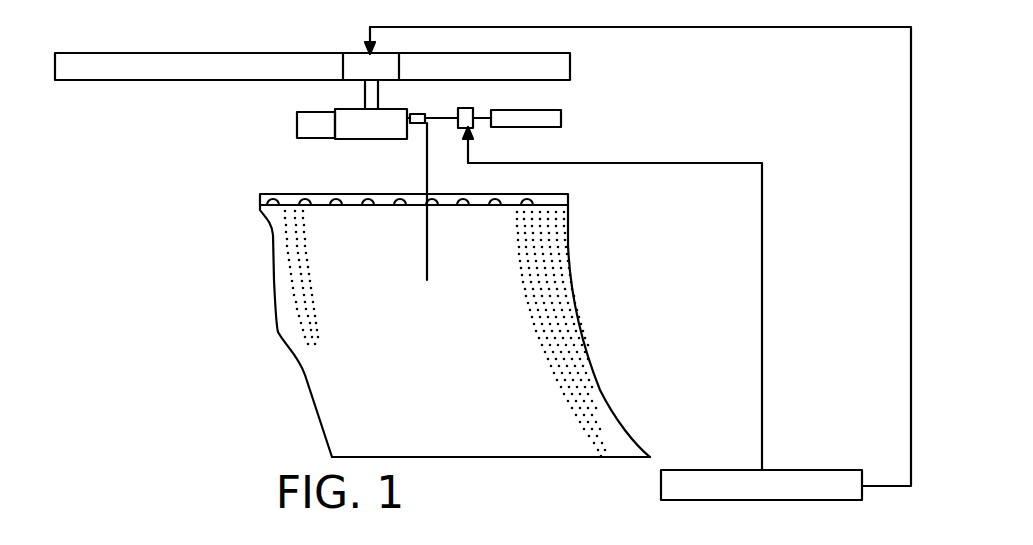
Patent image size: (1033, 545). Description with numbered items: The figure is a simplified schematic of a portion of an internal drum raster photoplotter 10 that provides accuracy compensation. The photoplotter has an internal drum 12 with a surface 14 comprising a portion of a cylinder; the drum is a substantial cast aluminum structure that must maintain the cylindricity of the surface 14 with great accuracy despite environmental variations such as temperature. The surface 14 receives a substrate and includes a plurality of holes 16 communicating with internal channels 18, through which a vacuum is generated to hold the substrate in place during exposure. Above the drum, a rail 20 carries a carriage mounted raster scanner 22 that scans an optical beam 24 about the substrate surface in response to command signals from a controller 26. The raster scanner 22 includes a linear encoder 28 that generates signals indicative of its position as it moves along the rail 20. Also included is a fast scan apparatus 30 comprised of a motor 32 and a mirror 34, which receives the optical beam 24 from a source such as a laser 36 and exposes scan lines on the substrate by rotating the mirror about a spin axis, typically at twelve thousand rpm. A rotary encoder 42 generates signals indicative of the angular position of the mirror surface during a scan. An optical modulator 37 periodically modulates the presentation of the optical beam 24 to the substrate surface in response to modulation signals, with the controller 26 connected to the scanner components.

The internal drum raster photoplotter 10 is at (425, 342).
The internal drum 12 is at (329, 408).
The surface 14 is at (463, 441).
The holes 16 is at (518, 233).
The internal channels 18 is at (398, 206).
The rail 20 is at (218, 52).
The raster scanner 22 is at (354, 154).
The optical beam 24 is at (428, 165).
The controller 26 is at (726, 470).
The linear encoder 28 is at (357, 63).
The fast scan apparatus 30 is at (303, 100).
The motor 32 is at (377, 128).
The mirror 34 is at (422, 113).
The laser 36 is at (561, 112).
The optical modulator 37 is at (472, 122).
The rotary encoder 42 is at (297, 126).